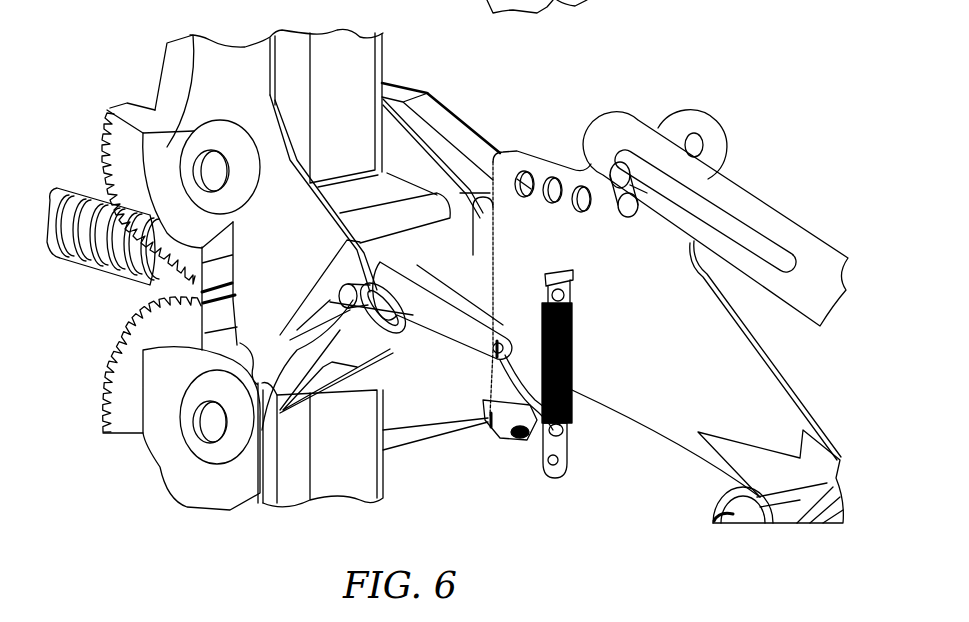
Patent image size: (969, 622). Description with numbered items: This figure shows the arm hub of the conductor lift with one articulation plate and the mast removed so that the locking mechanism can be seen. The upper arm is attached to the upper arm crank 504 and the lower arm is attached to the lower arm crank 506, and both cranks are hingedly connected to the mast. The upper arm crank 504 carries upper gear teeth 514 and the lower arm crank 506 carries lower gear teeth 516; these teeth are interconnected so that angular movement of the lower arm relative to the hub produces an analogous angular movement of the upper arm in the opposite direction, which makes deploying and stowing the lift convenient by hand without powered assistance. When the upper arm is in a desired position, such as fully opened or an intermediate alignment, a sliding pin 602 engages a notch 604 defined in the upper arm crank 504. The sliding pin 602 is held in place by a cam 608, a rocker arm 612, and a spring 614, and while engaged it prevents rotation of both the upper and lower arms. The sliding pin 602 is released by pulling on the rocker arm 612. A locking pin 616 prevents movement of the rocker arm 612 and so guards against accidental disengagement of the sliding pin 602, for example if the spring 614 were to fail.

The upper arm crank 504 is at (190, 35).
The lower arm crank 506 is at (130, 427).
The upper gear teeth 514 is at (118, 236).
The lower gear teeth 516 is at (110, 338).
The sliding pin 602 is at (247, 423).
The notch 604 is at (363, 365).
The cam 608 is at (433, 303).
The rocker arm 612 is at (503, 387).
The locking pin 616 is at (513, 437).
The spring 614 is at (580, 363).